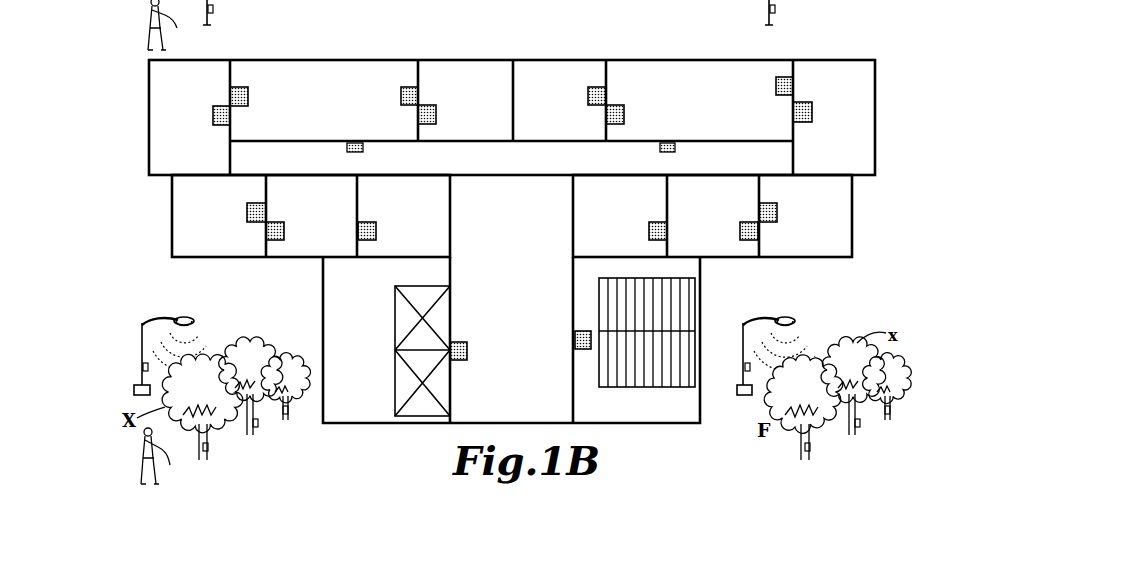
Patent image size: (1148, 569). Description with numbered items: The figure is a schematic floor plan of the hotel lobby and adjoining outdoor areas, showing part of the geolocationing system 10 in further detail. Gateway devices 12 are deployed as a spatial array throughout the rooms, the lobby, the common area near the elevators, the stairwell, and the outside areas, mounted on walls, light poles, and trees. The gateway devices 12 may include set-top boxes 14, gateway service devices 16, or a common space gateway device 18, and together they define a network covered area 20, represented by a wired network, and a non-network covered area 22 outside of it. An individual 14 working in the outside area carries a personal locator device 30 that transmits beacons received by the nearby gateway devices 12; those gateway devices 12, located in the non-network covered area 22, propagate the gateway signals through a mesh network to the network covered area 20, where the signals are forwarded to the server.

The geolocationing system 10 is at (128, 78).
The gateway devices 12 is at (239, 87).
The set-top boxes 14 is at (727, 0).
The gateway service devices 16 is at (351, 151).
The common space gateway device 18 is at (575, 346).
The network covered area 20 is at (856, 221).
The non-network covered area 22 is at (128, 336).
The personal locator devices 30 is at (177, 252).